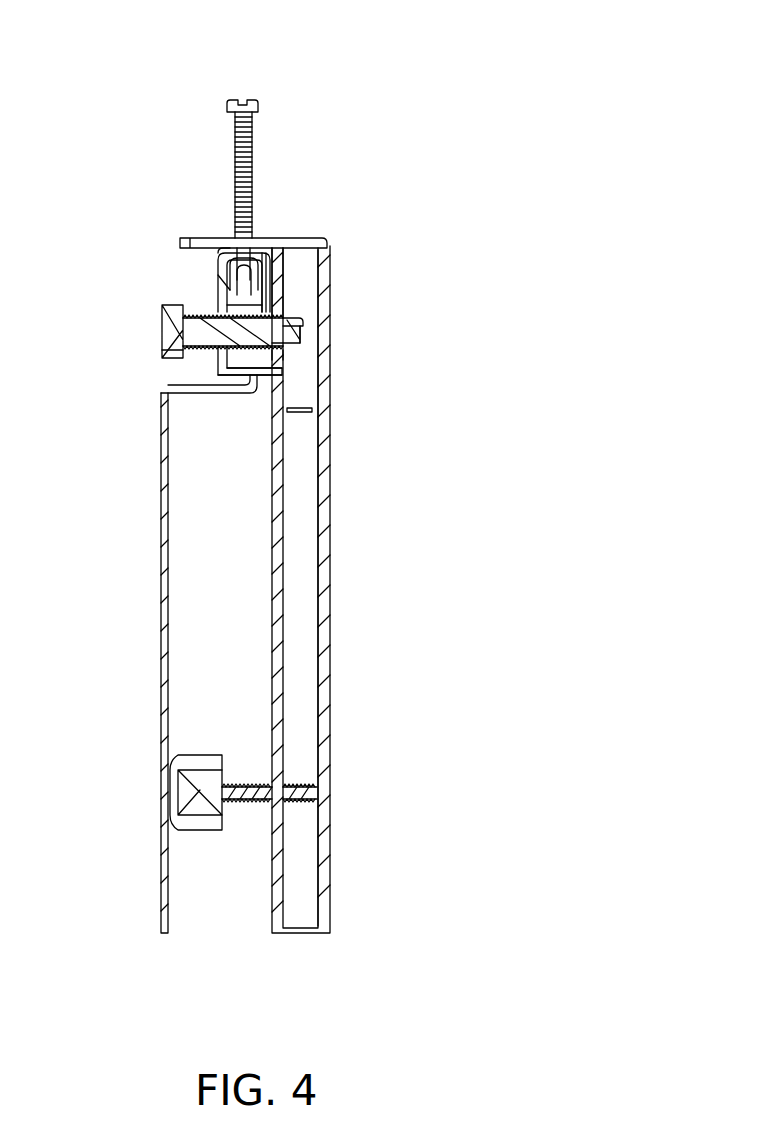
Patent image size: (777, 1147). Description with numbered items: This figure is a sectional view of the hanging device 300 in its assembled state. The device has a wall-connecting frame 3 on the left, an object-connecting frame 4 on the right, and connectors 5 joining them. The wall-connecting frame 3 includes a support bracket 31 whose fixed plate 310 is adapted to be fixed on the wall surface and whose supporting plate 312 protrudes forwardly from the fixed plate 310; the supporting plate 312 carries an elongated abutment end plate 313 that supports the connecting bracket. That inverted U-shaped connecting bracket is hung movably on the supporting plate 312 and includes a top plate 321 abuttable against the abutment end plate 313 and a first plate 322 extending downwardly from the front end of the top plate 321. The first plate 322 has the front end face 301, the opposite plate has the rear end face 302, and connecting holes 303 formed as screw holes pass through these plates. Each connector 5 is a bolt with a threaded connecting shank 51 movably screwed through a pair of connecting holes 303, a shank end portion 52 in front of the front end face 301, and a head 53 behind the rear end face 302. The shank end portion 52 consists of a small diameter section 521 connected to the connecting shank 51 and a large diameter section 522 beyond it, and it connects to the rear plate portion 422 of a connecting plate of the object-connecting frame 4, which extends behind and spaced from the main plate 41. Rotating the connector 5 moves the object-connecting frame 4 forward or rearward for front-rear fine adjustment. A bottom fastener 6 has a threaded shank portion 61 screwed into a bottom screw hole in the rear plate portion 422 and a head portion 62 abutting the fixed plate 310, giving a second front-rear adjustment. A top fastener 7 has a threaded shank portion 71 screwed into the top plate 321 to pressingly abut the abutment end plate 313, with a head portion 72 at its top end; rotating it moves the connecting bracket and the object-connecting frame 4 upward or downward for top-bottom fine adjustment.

The hanging device 300 is at (412, 108).
The wall-connecting frame 3 is at (210, 262).
The support bracket 31 is at (158, 510).
The fixed plate 310 is at (163, 585).
The supporting plate 312 is at (220, 397).
The abutment end plate 313 is at (200, 278).
The top plate 321 is at (247, 253).
The first plate 322 is at (282, 252).
The front end face 301 is at (270, 268).
The rear end face 302 is at (215, 290).
The connecting holes 303 is at (150, 393).
The object-connecting frame 4 is at (335, 717).
The main plate 41 is at (330, 757).
The rear plate portion 422 is at (285, 277).
The connector 5 is at (152, 308).
The connecting shank 51 is at (193, 332).
The shank end portion 52 is at (308, 312).
The small diameter section 521 is at (272, 352).
The large diameter section 522 is at (300, 330).
The head 53 is at (160, 357).
The bottom fastener 6 is at (222, 748).
The threaded shank portion 61 is at (258, 785).
The head portion 62 is at (197, 763).
The top fastener 7 is at (227, 95).
The threaded shank portion 71 is at (252, 150).
The head portion 72 is at (258, 103).